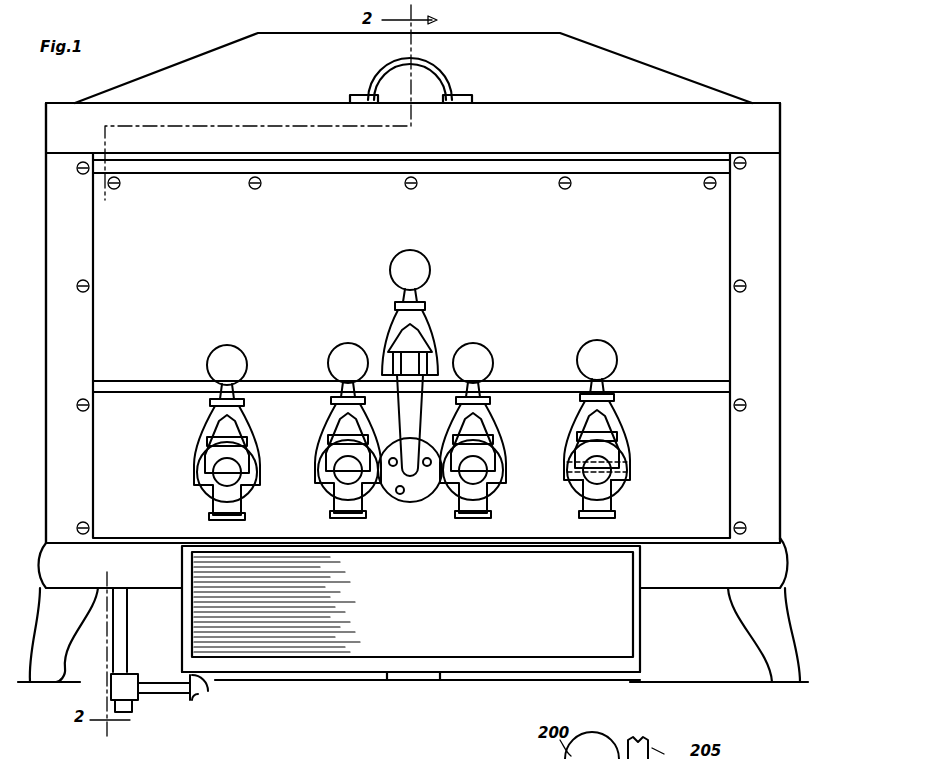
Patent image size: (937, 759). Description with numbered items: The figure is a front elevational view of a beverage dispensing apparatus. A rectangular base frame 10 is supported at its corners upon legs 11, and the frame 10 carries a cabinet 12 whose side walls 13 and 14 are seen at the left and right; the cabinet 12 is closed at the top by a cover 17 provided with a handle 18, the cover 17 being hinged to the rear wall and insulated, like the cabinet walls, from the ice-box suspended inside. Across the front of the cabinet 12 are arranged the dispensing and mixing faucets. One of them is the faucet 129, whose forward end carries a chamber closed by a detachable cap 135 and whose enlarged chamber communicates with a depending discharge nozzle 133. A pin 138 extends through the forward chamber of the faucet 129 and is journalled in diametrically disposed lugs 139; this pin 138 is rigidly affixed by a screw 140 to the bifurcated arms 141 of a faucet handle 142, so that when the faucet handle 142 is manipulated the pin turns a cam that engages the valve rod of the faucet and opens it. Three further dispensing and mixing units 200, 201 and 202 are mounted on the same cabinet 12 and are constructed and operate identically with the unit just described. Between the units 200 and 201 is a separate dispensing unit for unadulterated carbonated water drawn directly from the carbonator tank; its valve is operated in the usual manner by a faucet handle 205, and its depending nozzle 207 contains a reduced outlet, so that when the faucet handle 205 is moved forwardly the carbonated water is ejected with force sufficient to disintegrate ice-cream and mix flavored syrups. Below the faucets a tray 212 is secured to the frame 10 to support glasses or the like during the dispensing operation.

The base frame 10 is at (46, 560).
The legs 11 is at (42, 676).
The cabinet 12 is at (670, 527).
The side wall 13 is at (50, 222).
The side wall 14 is at (781, 354).
The cover 17 is at (228, 58).
The handle 18 is at (437, 84).
The faucet 129 is at (605, 427).
The discharge nozzle 133 is at (613, 514).
The detachable cap 135 is at (616, 488).
The pin 138 is at (637, 456).
The lugs 139 is at (576, 466).
The screw 140 is at (576, 488).
The bifurcated arms 141 is at (616, 432).
The faucet handle 142 is at (620, 368).
The dispensing and mixing unit 200 is at (498, 442).
The dispensing and mixing unit 201 is at (322, 445).
The dispensing and mixing unit 202 is at (194, 443).
The faucet handle 205 is at (428, 276).
The depending nozzle 207 is at (416, 492).
The tray 212 is at (513, 646).